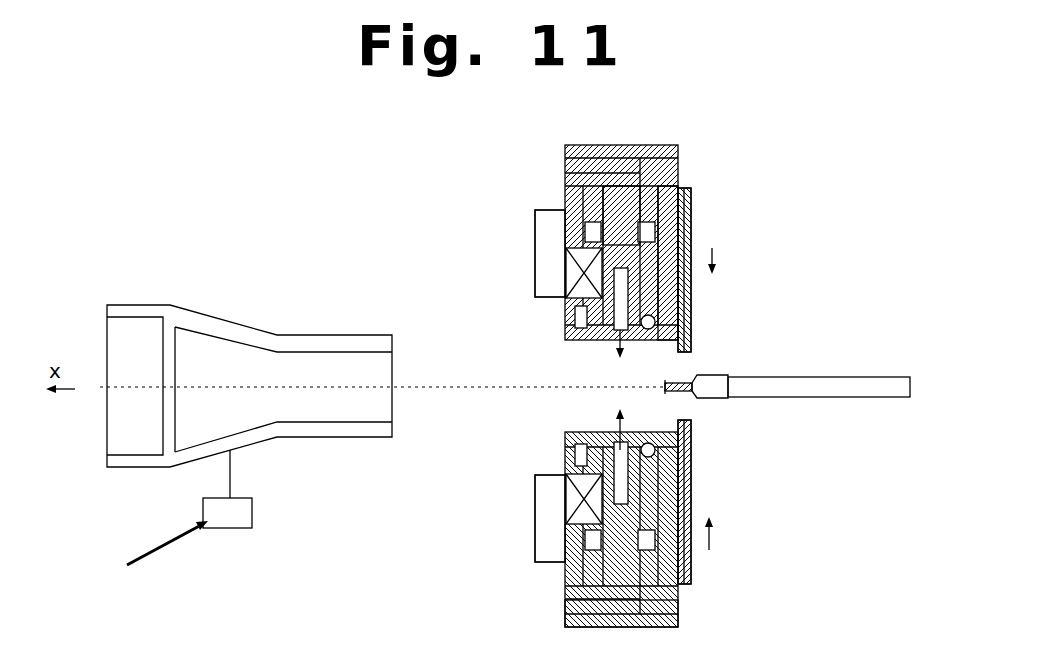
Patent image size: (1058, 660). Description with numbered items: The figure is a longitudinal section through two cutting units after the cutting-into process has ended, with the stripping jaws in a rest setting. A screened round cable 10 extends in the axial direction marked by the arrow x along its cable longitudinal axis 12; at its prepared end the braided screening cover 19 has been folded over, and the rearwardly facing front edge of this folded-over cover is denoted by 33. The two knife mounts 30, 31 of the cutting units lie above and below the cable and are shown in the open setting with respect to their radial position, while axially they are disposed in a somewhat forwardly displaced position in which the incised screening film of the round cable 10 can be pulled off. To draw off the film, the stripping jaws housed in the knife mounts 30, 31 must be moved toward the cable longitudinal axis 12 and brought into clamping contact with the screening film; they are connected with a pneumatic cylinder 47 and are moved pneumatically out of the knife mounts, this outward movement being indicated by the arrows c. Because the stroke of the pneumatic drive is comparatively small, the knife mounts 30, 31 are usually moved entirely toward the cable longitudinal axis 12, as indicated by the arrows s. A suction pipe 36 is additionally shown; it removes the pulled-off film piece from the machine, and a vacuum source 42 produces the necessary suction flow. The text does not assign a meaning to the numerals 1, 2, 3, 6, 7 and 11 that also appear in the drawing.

The apparatus 1 is at (226, 136).
The upper holder 2 is at (606, 211).
The lower holder 3 is at (590, 513).
The upper clamping plate 6 is at (683, 224).
The lower clamping plate 7 is at (683, 490).
The screened round cable 10 is at (818, 377).
The rod tip 11 is at (685, 392).
The cable longitudinal axis 12 is at (445, 385).
The braided screening cover 19 is at (710, 378).
The knife mount 30 is at (670, 200).
The knife mount 31 is at (677, 578).
The front edge of the folded-over braided screening cover 33 is at (722, 383).
The suction pipe 36 is at (233, 326).
The vacuum source 42 is at (233, 513).
The pneumatic cylinder 47 is at (615, 207).